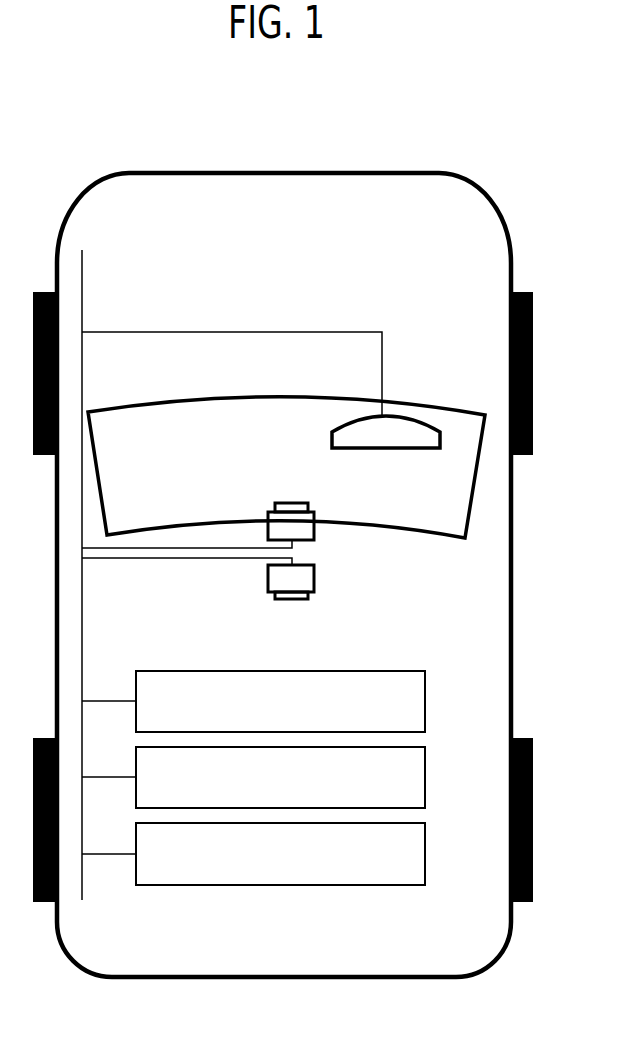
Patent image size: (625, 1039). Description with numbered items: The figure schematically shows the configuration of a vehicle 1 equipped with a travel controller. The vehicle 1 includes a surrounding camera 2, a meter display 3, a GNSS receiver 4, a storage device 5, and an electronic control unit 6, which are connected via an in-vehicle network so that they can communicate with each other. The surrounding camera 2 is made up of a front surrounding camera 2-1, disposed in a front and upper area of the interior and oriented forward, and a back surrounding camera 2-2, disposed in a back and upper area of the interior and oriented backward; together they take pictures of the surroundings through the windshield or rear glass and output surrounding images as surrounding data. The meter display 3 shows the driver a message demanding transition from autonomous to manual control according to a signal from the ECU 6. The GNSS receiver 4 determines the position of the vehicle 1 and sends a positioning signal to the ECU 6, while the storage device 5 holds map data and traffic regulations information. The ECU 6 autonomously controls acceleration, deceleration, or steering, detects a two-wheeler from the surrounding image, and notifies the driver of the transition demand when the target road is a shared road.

The vehicle 1 is at (415, 165).
The surrounding camera 2 is at (346, 564).
The front surrounding camera 2-1 is at (315, 530).
The back surrounding camera 2-2 is at (385, 555).
The meter display 3 is at (362, 418).
The GNSS receiver 4 is at (426, 707).
The storage device 5 is at (426, 783).
The electronic control unit 6 is at (426, 859).